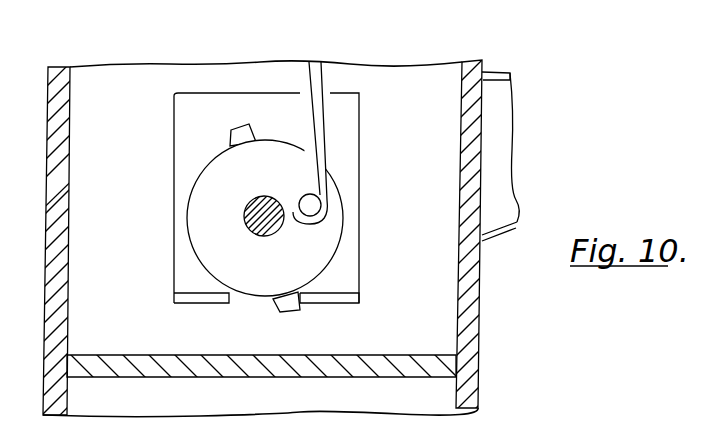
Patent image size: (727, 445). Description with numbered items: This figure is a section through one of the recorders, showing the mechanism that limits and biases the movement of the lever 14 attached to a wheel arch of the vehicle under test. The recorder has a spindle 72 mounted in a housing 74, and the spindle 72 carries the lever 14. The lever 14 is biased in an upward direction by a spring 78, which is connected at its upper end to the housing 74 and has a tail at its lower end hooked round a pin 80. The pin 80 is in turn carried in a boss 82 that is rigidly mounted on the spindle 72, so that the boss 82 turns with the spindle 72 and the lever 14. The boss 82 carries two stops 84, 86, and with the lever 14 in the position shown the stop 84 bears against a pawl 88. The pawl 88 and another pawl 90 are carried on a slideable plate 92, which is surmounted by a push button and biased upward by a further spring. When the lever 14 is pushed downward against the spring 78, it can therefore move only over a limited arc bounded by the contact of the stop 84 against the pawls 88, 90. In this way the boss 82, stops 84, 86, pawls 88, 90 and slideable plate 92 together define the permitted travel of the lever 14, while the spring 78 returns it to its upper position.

The lever 14 is at (508, 160).
The spindle 72 is at (247, 218).
The housing 74 is at (463, 340).
The spring 78 is at (322, 130).
The pin 80 is at (313, 205).
The boss 82 is at (202, 240).
The stop 84 is at (287, 305).
The stop 86 is at (233, 136).
The pawl 88 is at (333, 300).
The pawl 90 is at (187, 305).
The slideable plate 92 is at (180, 113).